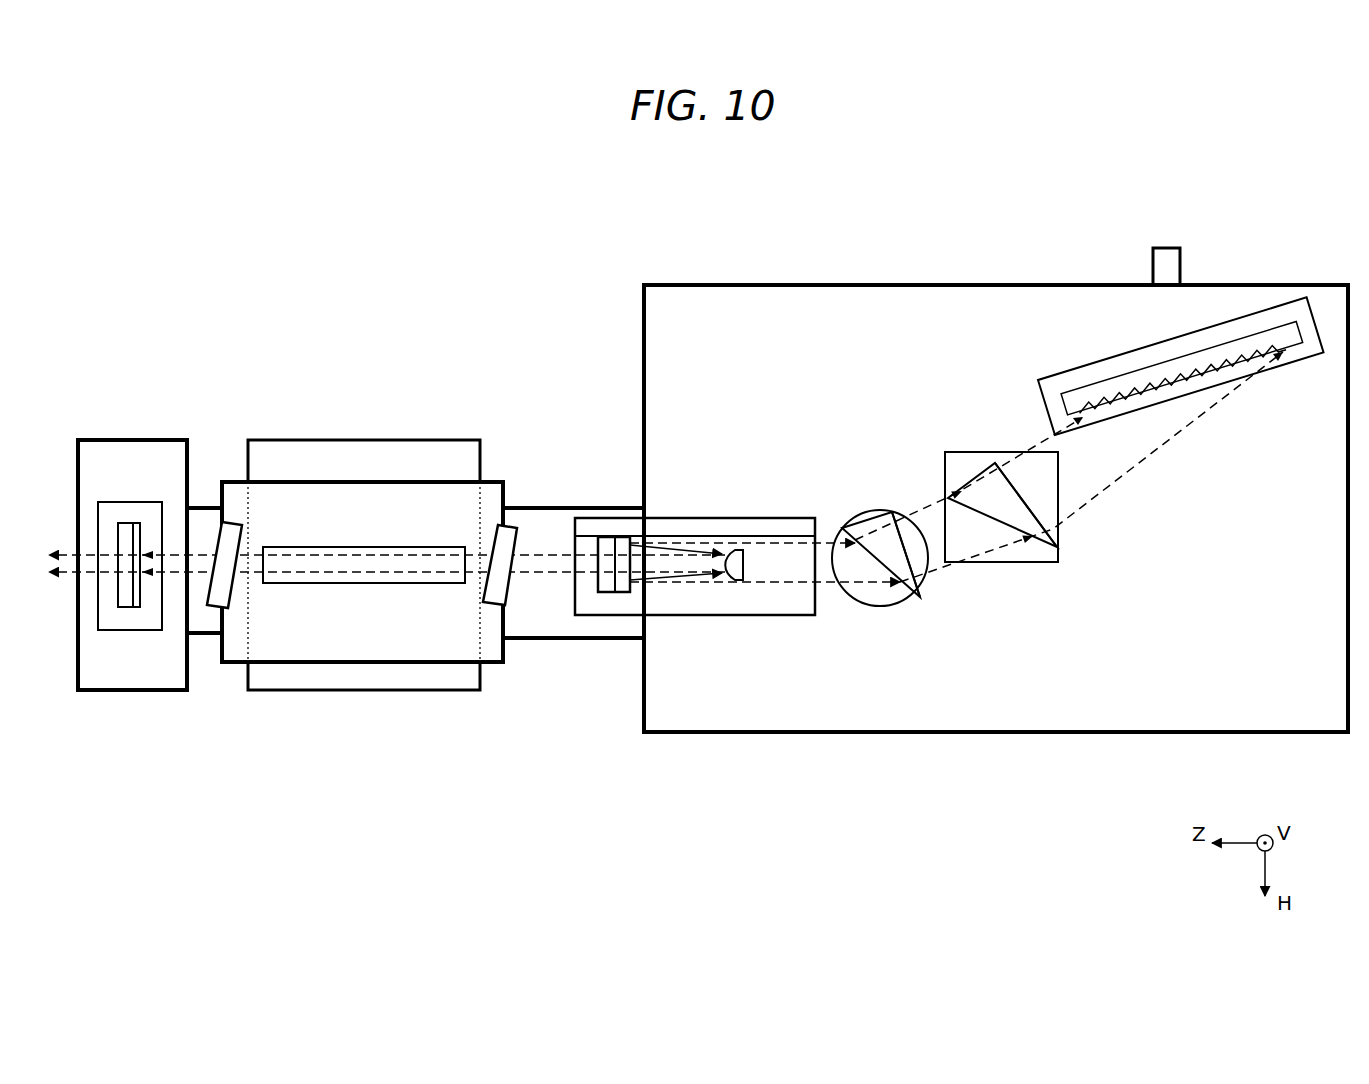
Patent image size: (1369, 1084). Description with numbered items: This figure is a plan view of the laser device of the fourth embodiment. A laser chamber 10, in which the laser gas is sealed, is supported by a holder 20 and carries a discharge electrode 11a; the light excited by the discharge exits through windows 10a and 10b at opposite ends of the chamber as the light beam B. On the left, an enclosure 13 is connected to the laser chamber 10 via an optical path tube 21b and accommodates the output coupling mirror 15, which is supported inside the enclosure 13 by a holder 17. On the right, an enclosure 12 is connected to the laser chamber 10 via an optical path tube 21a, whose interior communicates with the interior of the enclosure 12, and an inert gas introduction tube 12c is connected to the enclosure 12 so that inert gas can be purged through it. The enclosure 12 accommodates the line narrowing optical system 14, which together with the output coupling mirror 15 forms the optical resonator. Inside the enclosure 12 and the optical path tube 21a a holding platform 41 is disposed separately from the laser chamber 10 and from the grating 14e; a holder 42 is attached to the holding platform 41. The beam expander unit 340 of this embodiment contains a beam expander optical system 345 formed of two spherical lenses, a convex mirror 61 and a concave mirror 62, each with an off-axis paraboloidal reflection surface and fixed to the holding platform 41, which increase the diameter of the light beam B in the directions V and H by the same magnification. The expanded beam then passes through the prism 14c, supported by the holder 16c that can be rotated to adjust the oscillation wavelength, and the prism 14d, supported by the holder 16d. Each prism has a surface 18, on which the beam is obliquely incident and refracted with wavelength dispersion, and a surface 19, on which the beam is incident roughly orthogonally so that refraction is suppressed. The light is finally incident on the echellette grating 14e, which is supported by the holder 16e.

The laser chamber 10 is at (362, 553).
The window 10a is at (486, 596).
The window 10b is at (241, 536).
The discharge electrode 11a is at (355, 527).
The enclosure 12 is at (933, 525).
The inert gas introduction tube 12c is at (1181, 270).
The enclosure 13 is at (132, 565).
The line narrowing optical system 14 is at (1330, 227).
The prism 14c is at (866, 510).
The prism 14d is at (995, 455).
The grating 14e is at (1163, 366).
The output coupling mirror 15 is at (131, 608).
The holder 16c is at (880, 600).
The holder 16d is at (1001, 580).
The holder 16e is at (1163, 431).
The holder 17 is at (112, 632).
The surface 18 is at (885, 573).
The surface 19 is at (902, 518).
The holder 20 is at (355, 691).
The optical path tube 21a is at (580, 640).
The optical path tube 21b is at (208, 634).
The holding platform 41 is at (706, 573).
The holder 42 is at (757, 518).
The convex mirror 61 is at (733, 550).
The concave mirror 62 is at (622, 537).
The beam expander unit 340 is at (750, 663).
The beam expander optical system 345 is at (668, 625).
The light beam B is at (529, 574).